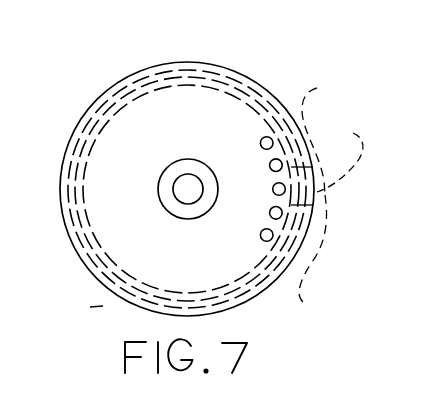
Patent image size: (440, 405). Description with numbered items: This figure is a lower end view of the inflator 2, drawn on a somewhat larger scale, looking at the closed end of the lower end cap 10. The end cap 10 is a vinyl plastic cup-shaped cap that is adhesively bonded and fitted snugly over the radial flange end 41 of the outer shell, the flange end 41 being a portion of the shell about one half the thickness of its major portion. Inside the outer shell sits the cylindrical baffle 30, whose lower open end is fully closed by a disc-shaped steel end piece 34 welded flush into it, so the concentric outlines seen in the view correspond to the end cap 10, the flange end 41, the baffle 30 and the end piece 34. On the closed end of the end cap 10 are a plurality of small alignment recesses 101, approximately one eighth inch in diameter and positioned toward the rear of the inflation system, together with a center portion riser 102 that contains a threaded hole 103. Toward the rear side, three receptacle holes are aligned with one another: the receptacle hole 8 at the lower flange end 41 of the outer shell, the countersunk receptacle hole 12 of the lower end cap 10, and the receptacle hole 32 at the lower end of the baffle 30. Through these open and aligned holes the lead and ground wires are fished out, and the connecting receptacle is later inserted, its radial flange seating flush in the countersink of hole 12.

The inflator 2 is at (218, 52).
The receptacle hole 8 is at (347, 212).
The end cap 10 is at (223, 68).
The countersunk receptacle hole 12 is at (348, 100).
The baffle 30 is at (200, 80).
The receptacle hole 32 is at (352, 318).
The end piece 34 is at (156, 253).
The radial flange end 41 is at (134, 83).
The alignment recess 101 is at (270, 166).
The center portion riser 102 is at (158, 190).
The threaded hole 103 is at (190, 175).